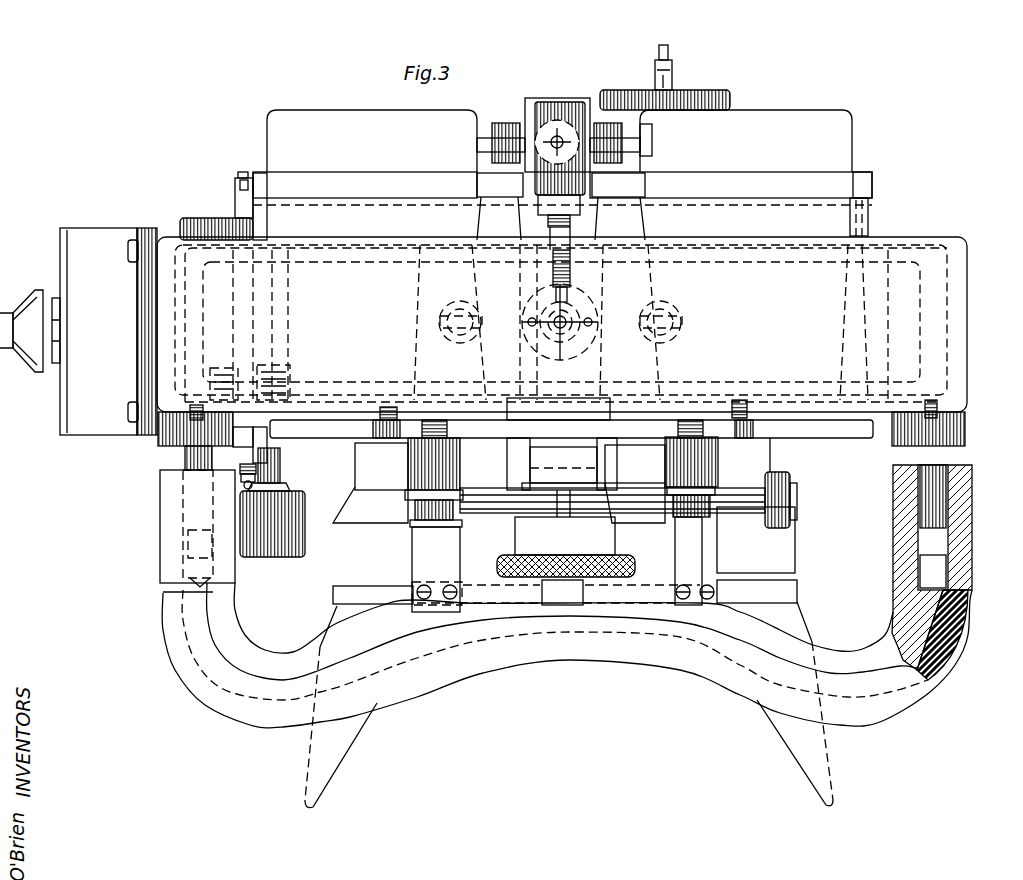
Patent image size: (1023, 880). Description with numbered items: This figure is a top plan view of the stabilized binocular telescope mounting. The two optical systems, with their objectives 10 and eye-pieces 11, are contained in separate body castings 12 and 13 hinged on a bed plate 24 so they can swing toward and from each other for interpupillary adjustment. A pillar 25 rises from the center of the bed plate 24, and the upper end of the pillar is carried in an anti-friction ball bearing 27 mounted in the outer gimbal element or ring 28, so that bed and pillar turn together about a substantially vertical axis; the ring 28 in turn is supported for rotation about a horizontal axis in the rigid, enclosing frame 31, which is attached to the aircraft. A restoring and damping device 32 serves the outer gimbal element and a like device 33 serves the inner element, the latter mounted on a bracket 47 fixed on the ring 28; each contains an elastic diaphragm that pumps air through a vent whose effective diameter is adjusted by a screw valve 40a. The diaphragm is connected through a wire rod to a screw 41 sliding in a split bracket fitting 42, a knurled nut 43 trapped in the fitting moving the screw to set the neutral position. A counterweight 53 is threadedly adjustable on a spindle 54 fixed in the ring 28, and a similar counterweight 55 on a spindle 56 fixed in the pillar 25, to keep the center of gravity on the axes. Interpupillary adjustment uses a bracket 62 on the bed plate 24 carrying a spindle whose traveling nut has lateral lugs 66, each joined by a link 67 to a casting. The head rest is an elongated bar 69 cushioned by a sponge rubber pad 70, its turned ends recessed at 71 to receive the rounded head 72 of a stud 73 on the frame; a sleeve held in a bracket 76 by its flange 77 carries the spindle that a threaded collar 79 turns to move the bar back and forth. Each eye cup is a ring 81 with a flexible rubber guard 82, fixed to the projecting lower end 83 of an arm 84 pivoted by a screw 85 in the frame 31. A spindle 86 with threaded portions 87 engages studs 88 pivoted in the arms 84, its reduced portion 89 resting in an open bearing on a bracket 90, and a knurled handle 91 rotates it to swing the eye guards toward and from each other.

The objectives 10 is at (354, 112).
The eye-pieces 11 is at (336, 547).
The body casting 12 is at (840, 365).
The body casting 13 is at (290, 367).
The bed plate 24 is at (525, 100).
The pillar 25 is at (677, 268).
The anti-friction ball bearing 27 is at (592, 308).
The outer gimbal element 28 is at (937, 357).
The frame 31 is at (968, 373).
The restoring and damping device 32 is at (197, 216).
The restoring and damping device 33 is at (722, 90).
The screw valve 40a is at (668, 52).
The screw 41 is at (240, 483).
The split bracket fitting 42 is at (236, 469).
The knurled nut 43 is at (272, 439).
The bracket 47 is at (642, 124).
The counterweight 53 is at (280, 561).
The spindle 54 is at (282, 473).
The counterweight 55 is at (560, 110).
The spindle 56 is at (574, 222).
The bracket 62 is at (558, 100).
The lateral lugs 66 is at (492, 123).
The link 67 is at (490, 146).
The elongated bar 69 is at (972, 509).
The pad 70 is at (966, 617).
The recess 71 is at (180, 592).
The rounded head 72 is at (193, 540).
The stud 73 is at (185, 459).
The bracket 76 is at (370, 432).
The flange 77 is at (947, 563).
The threaded collar 79 is at (620, 555).
The ring 81 is at (333, 597).
The flexible rubber guard 82 is at (366, 737).
The projecting lower end 83 is at (412, 569).
The arm 84 is at (410, 461).
The screw 85 is at (412, 494).
The spindle 86 is at (637, 490).
The threaded portions 87 is at (414, 510).
The studs 88 is at (412, 526).
The portion of reduced diameter 89 is at (568, 516).
The bracket 90 is at (565, 480).
The knurled handle 91 is at (790, 476).